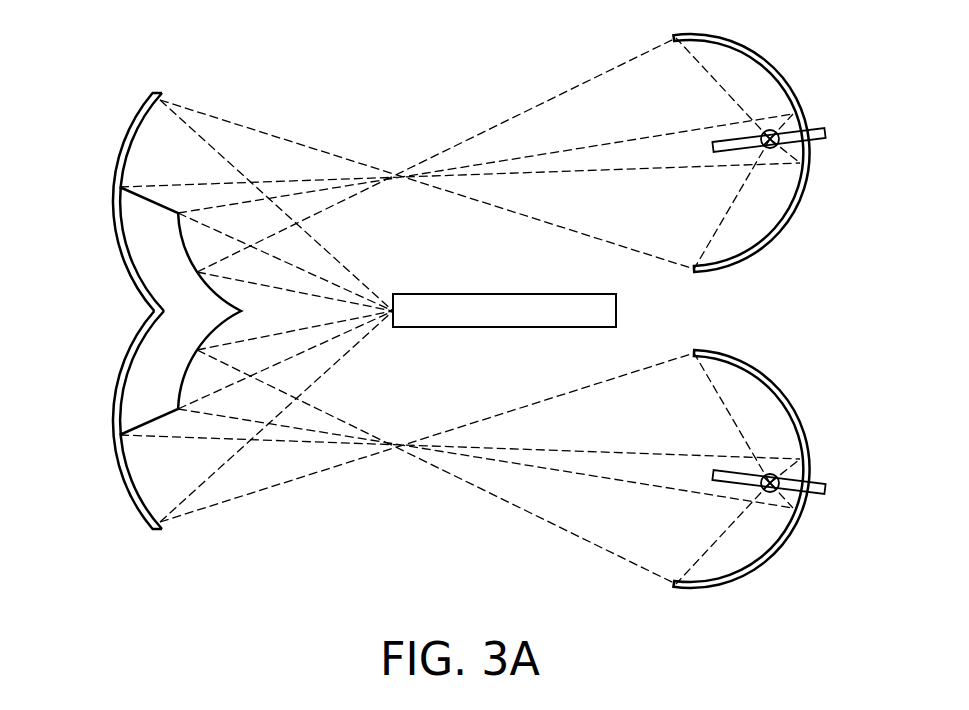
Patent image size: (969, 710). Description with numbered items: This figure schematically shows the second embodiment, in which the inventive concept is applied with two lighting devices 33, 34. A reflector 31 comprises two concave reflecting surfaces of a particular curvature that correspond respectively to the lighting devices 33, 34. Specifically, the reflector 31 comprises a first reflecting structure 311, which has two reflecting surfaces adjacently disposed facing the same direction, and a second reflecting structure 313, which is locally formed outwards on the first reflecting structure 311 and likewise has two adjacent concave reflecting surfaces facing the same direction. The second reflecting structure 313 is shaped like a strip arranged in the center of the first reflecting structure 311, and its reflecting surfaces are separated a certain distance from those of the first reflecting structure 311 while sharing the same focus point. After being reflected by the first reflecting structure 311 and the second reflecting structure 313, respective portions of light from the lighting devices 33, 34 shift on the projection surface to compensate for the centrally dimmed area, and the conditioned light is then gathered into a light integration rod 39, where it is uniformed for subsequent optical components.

The reflector 31 is at (97, 276).
The first reflecting structure 311 is at (128, 492).
The second reflecting structure 313 is at (162, 362).
The lighting device 33 is at (808, 68).
The lighting device 34 is at (810, 391).
The light integration rod 39 is at (605, 313).